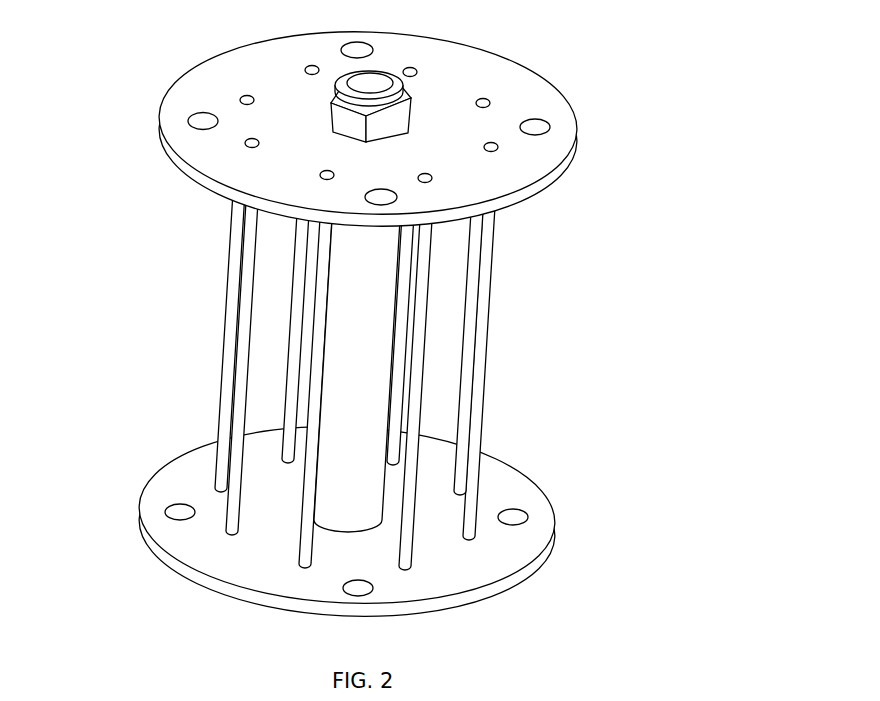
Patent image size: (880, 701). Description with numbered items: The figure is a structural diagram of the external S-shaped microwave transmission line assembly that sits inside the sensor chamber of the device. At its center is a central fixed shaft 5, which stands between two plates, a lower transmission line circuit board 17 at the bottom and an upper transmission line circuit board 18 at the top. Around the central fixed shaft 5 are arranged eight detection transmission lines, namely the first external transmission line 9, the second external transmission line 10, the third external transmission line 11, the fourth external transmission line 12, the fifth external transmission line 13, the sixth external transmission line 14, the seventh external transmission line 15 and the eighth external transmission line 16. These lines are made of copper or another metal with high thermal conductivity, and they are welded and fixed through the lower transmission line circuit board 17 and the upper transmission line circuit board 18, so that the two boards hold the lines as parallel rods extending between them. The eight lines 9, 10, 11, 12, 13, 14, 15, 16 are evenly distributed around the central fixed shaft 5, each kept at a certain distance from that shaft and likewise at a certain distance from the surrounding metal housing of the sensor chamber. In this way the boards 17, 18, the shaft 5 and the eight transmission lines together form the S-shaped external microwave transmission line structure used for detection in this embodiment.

The central fixed shaft 5 is at (371, 289).
The first external transmission line 9 is at (229, 341).
The second external transmission line 10 is at (234, 433).
The third external transmission line 11 is at (303, 548).
The fourth external transmission line 12 is at (407, 545).
The fifth external transmission line 13 is at (475, 497).
The sixth external transmission line 14 is at (463, 413).
The seventh external transmission line 15 is at (394, 350).
The eighth external transmission line 16 is at (291, 262).
The lower transmission line circuit board 17 is at (237, 565).
The upper transmission line circuit board 18 is at (502, 158).